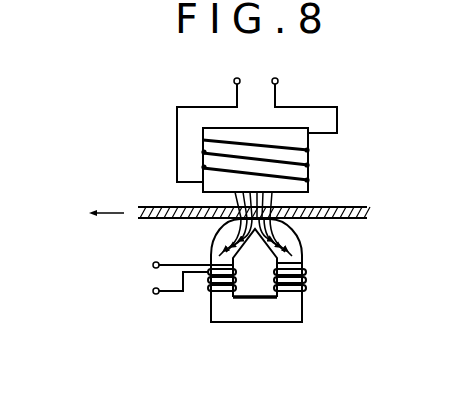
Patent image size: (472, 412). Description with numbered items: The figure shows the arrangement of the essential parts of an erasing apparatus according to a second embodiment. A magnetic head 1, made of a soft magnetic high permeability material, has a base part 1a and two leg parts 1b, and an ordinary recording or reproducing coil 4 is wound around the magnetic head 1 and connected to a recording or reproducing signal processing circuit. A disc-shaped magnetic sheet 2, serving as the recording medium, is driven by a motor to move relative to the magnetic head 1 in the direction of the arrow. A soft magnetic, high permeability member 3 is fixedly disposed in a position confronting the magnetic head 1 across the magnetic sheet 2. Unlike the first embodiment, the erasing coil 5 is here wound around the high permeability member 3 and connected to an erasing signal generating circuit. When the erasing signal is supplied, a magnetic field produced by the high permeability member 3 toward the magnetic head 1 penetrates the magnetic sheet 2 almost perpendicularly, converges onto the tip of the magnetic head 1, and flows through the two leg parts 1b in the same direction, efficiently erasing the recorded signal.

The magnetic head 1 is at (266, 294).
The base part 1a is at (254, 312).
The leg parts 1b is at (211, 250).
The magnetic sheet 2 is at (348, 208).
The high permeability member 3 is at (298, 156).
The recording or reproducing coil 4 is at (303, 296).
The erasing coil 5 is at (281, 145).